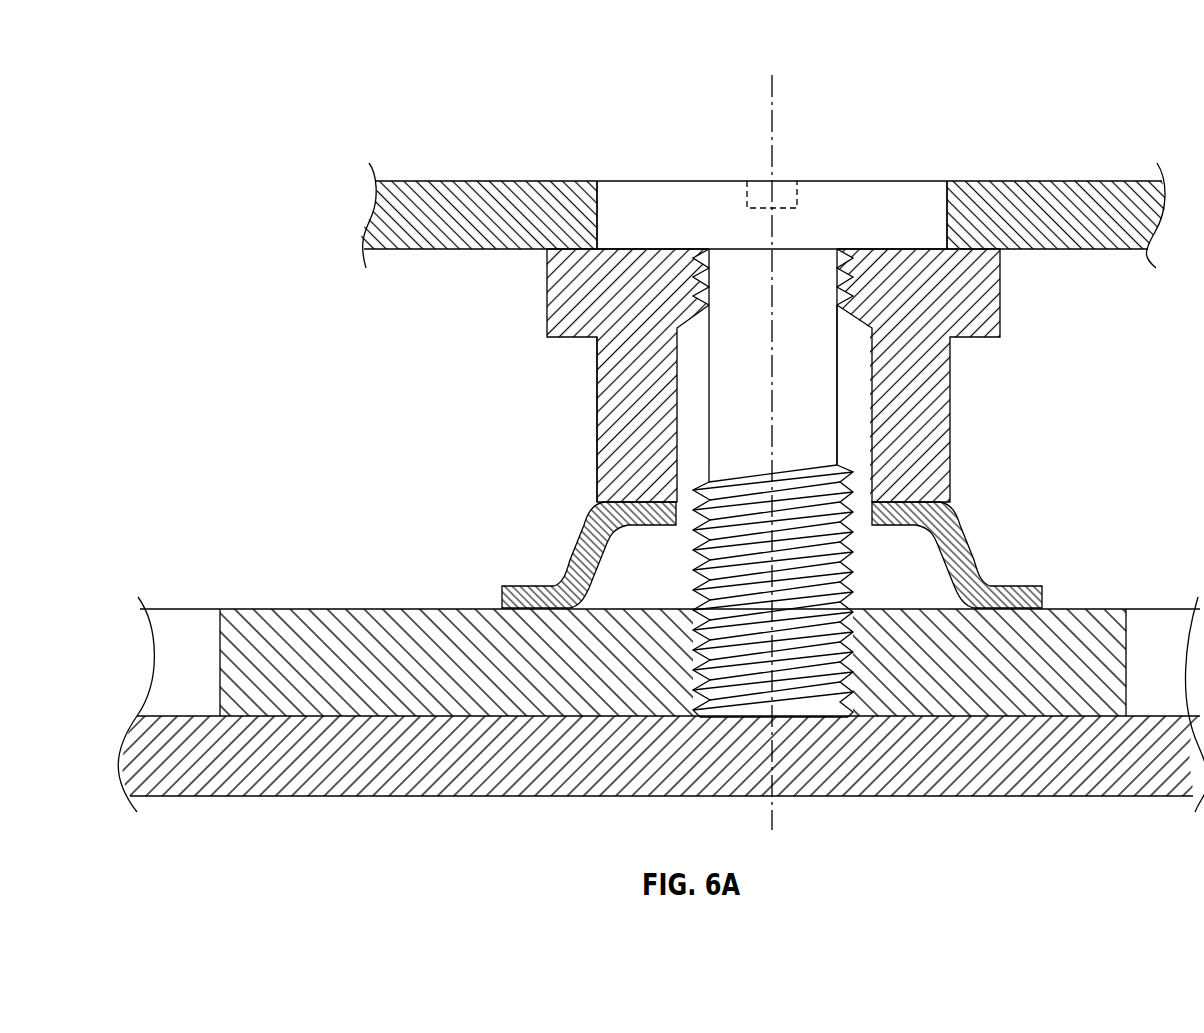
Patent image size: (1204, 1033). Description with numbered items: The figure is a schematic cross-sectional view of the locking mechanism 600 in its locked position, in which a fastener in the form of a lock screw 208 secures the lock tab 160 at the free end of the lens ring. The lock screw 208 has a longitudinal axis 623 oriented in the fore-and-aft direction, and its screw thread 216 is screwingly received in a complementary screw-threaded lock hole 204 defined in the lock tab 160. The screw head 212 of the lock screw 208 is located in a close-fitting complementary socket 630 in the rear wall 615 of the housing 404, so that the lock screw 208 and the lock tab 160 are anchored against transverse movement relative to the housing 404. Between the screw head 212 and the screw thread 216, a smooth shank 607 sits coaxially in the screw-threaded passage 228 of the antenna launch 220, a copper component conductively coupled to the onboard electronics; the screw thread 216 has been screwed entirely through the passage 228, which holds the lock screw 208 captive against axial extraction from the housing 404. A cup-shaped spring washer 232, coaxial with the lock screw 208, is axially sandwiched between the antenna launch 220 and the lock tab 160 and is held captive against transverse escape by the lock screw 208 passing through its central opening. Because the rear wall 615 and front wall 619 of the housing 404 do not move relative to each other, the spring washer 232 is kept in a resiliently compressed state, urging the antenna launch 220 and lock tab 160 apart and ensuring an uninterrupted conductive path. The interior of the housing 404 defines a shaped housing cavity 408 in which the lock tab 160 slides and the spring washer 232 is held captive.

The locking mechanism 600 is at (998, 58).
The lock screw 208 is at (890, 105).
The longitudinal axis 623 is at (775, 99).
The housing 404 is at (661, 491).
The rear wall 615 is at (1005, 181).
The front wall 619 is at (357, 790).
The socket 630 is at (593, 205).
The screw head 212 is at (662, 181).
The lock tab 160 is at (1084, 613).
The antenna launch 220 is at (773, 375).
The screw-threaded passage 228 is at (686, 297).
The smooth shank 607 is at (838, 343).
The housing cavity 408 is at (457, 458).
The lock hole 204 is at (822, 544).
The screw thread 216 is at (838, 593).
The spring washer 232 is at (962, 550).